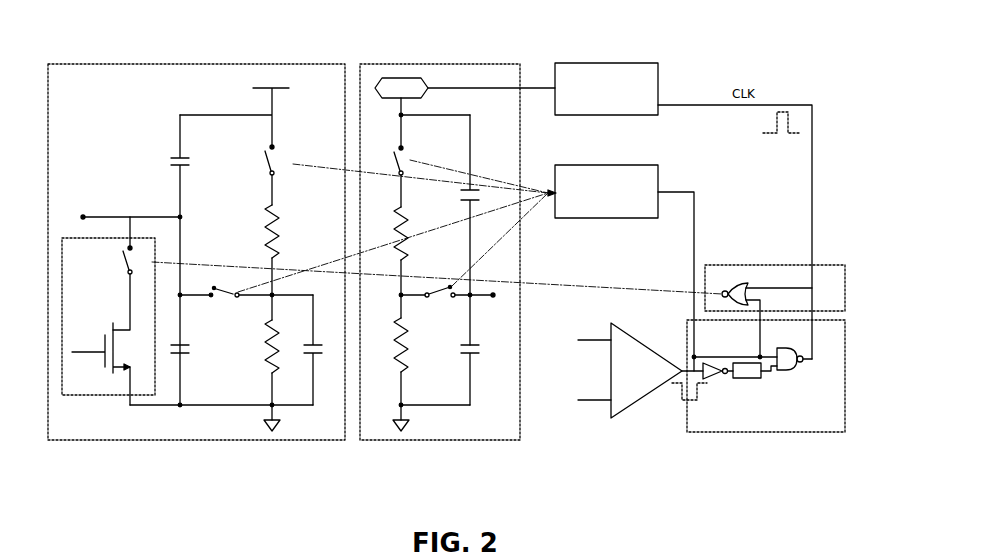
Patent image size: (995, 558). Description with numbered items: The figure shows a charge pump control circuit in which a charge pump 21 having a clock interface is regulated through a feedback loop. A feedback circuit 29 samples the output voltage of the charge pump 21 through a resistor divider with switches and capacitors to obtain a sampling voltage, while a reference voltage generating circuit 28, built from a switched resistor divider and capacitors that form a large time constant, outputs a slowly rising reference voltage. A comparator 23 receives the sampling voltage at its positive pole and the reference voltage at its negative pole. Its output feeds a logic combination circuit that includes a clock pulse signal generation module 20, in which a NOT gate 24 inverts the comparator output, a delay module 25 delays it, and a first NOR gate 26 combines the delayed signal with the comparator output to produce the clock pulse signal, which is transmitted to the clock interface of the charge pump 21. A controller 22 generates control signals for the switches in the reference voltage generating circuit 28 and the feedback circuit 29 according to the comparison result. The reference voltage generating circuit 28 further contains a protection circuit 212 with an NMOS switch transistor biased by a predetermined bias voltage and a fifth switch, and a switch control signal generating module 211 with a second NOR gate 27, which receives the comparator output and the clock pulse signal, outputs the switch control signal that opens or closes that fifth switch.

The clock pulse signal generation module 20 is at (818, 422).
The charge pump 21 is at (615, 72).
The controller 22 is at (607, 175).
The comparator 23 is at (635, 388).
The NOT gate 24 is at (708, 377).
The delay module 25 is at (750, 378).
The first NOR gate 26 is at (787, 367).
The second NOR gate 27 is at (738, 280).
The reference voltage generating circuit 28 is at (175, 67).
The feedback circuit 29 is at (378, 67).
The switch control signal generating module 211 is at (845, 295).
The protection circuit 212 is at (82, 389).